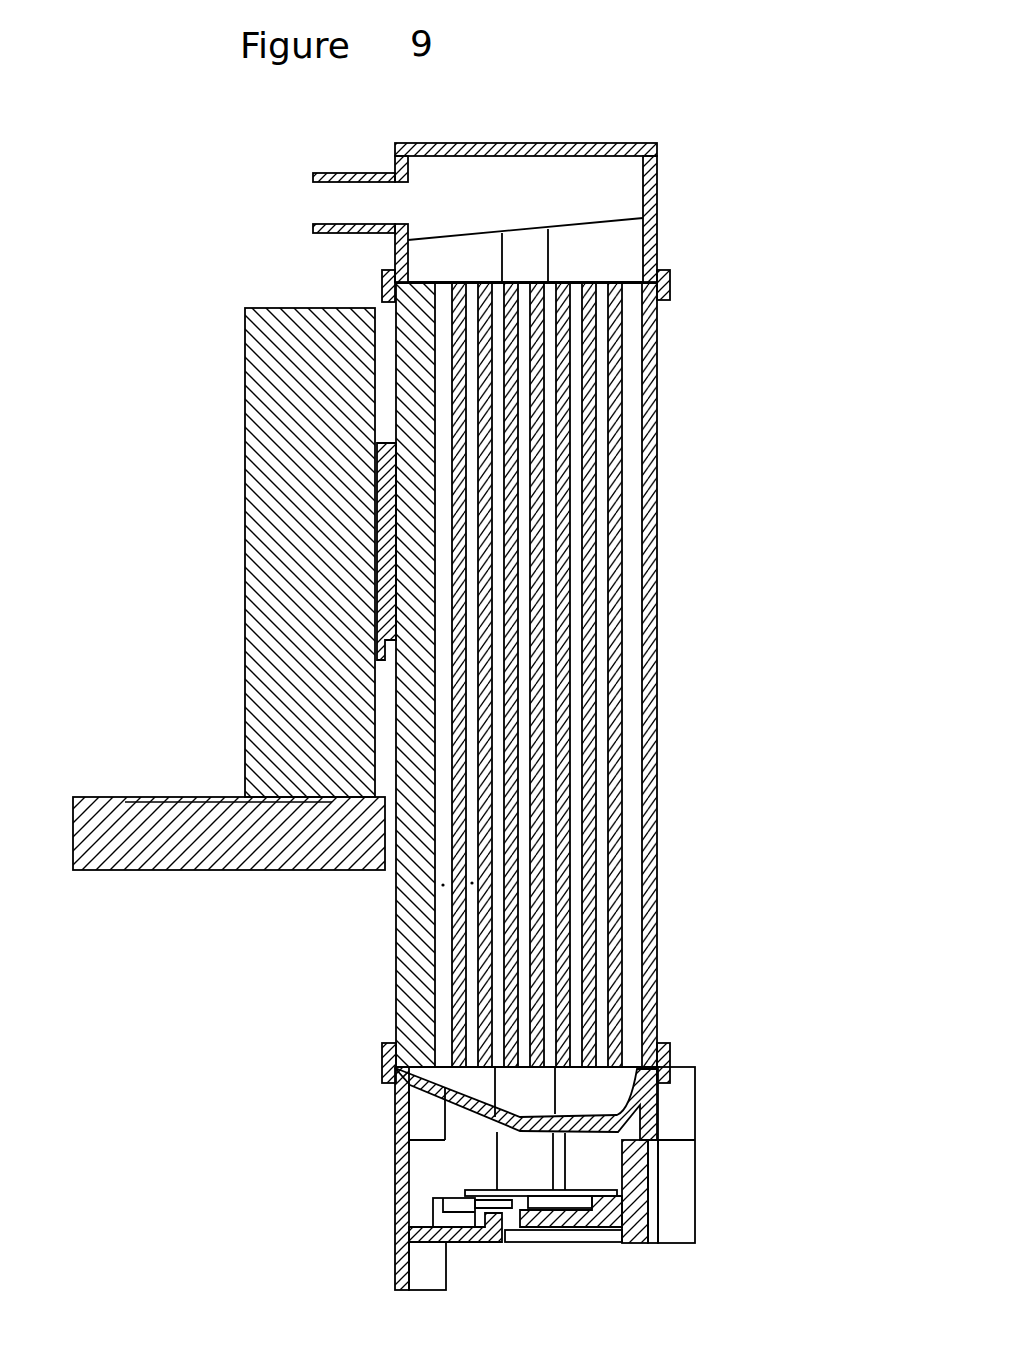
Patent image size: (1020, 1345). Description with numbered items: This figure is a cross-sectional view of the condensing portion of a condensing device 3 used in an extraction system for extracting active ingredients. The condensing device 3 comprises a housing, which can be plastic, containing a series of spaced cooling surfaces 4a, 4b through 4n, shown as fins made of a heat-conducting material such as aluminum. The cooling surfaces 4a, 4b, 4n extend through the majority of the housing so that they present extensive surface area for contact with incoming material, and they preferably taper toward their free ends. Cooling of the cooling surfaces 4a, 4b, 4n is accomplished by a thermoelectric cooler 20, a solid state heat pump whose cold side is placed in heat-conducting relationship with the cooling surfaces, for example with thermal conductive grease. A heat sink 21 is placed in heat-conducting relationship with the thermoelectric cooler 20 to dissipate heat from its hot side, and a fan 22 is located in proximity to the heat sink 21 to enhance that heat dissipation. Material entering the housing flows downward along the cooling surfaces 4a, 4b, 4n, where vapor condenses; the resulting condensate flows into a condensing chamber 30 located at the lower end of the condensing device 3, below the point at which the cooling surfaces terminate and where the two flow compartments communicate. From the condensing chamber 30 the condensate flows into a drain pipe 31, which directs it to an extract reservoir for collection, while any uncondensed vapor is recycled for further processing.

The condensing device 3 is at (705, 356).
The cooling surface 4a is at (453, 972).
The cooling surface 4b is at (479, 988).
The cooling surface 4n is at (618, 937).
The thermoelectric cooler 20 is at (377, 600).
The heat sink 21 is at (245, 460).
The fan 22 is at (128, 864).
The condensing chamber 30 is at (604, 1096).
The drain pipe 31 is at (563, 1167).